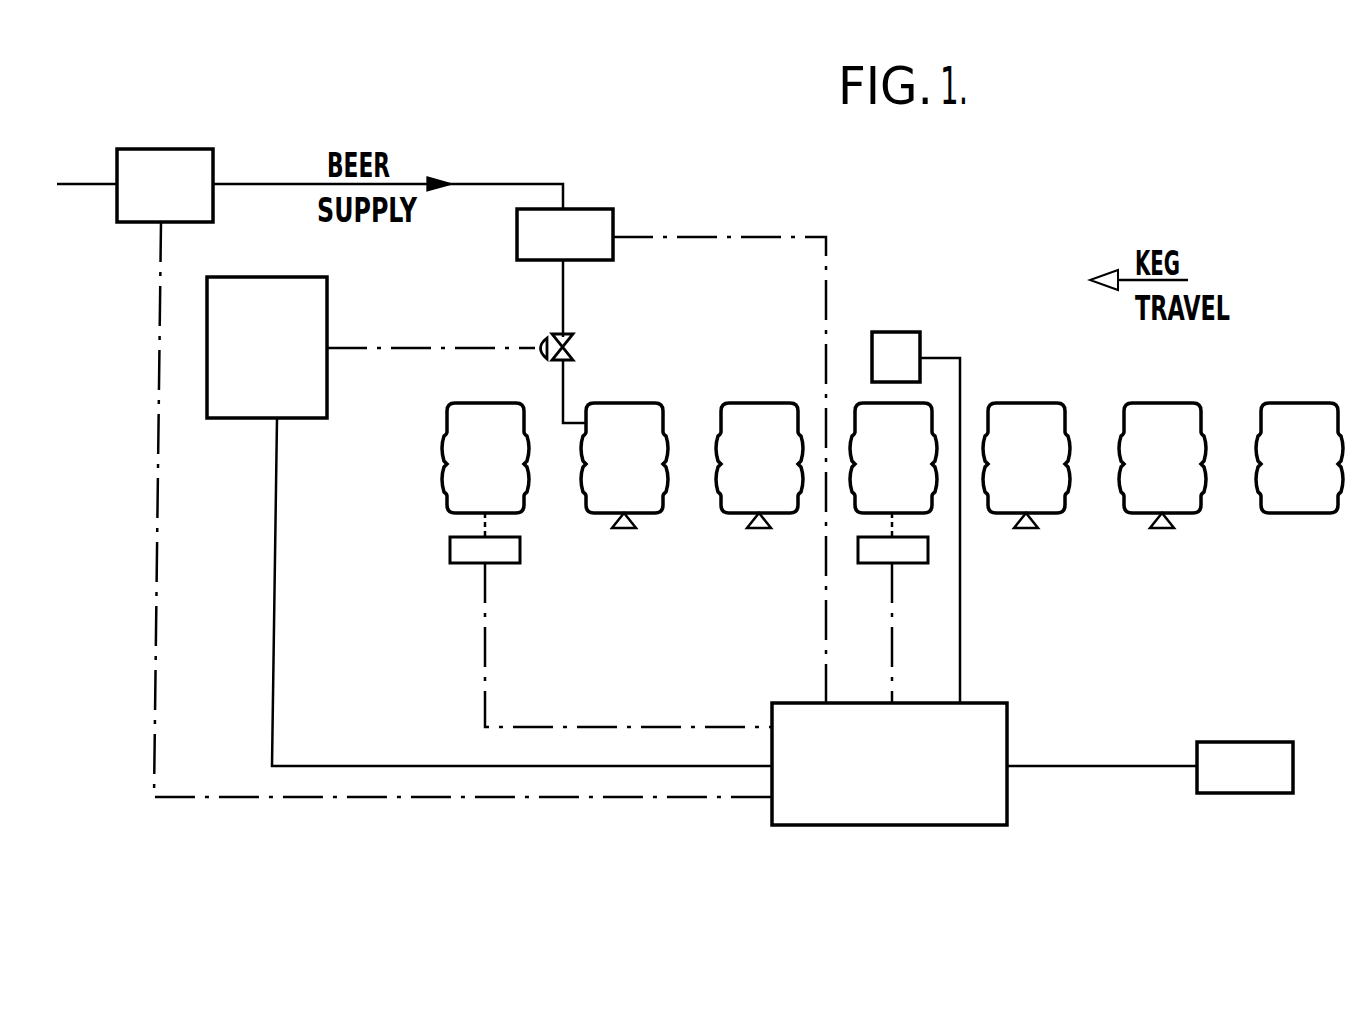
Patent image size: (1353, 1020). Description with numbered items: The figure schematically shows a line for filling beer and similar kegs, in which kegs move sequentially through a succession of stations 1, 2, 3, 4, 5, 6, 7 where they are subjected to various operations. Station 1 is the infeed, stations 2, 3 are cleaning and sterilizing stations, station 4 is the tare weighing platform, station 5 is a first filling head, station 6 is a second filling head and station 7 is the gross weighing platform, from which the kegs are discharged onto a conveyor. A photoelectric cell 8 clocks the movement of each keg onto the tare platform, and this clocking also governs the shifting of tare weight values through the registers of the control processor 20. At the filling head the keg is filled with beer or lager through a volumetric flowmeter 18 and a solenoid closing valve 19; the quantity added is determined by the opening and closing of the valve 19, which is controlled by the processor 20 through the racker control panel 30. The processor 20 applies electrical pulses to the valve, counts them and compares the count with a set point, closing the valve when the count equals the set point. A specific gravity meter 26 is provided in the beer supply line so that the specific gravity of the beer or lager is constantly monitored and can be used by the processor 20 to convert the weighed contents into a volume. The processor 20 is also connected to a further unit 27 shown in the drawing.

The infeed station 1 is at (1290, 479).
The cleaning and sterilizing station 2 is at (1154, 479).
The cleaning and sterilizing station 3 is at (1018, 479).
The tare weighing platform station 4 is at (885, 479).
The first filling head station 5 is at (751, 479).
The second filling head station 6 is at (616, 479).
The gross weighing platform station 7 is at (477, 479).
The photoelectric cell 8 is at (910, 335).
The volumetric flowmeter 18 is at (600, 210).
The solenoid closing valve 19 is at (573, 345).
The processor 20 is at (1007, 730).
The specific gravity meter 26 is at (213, 170).
The display/recorder 27 is at (1270, 742).
The racker control panel 30 is at (327, 318).